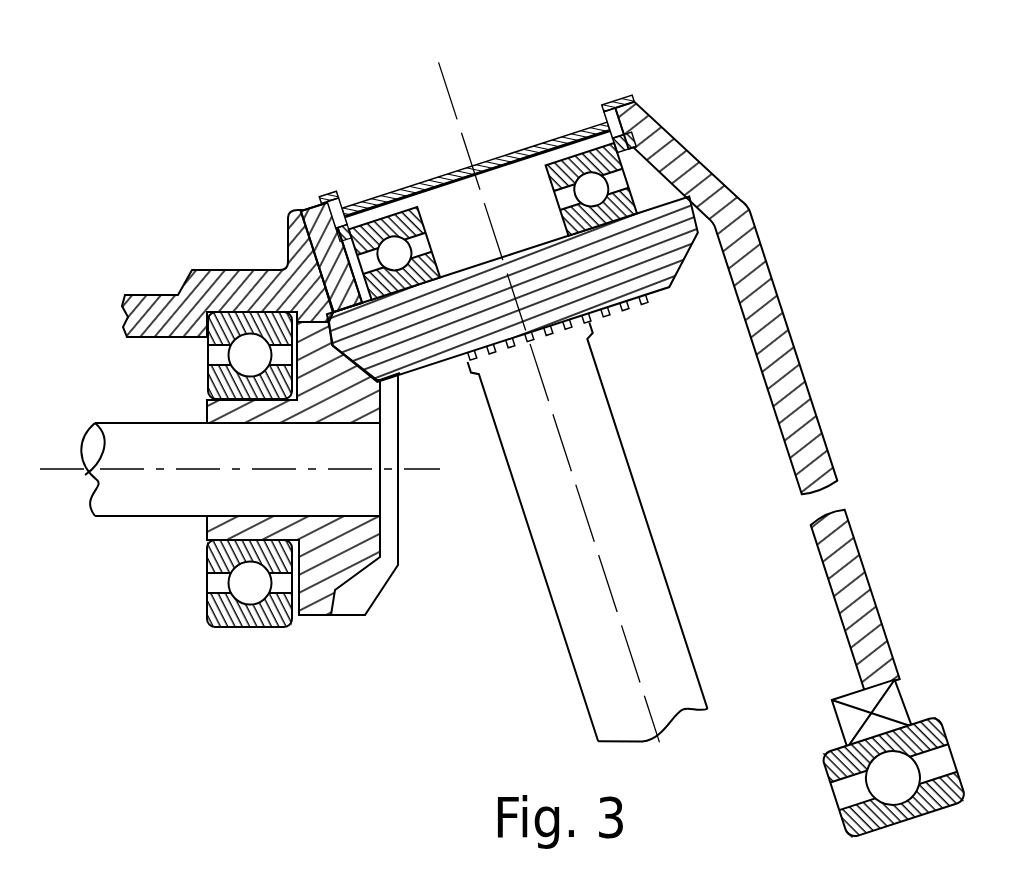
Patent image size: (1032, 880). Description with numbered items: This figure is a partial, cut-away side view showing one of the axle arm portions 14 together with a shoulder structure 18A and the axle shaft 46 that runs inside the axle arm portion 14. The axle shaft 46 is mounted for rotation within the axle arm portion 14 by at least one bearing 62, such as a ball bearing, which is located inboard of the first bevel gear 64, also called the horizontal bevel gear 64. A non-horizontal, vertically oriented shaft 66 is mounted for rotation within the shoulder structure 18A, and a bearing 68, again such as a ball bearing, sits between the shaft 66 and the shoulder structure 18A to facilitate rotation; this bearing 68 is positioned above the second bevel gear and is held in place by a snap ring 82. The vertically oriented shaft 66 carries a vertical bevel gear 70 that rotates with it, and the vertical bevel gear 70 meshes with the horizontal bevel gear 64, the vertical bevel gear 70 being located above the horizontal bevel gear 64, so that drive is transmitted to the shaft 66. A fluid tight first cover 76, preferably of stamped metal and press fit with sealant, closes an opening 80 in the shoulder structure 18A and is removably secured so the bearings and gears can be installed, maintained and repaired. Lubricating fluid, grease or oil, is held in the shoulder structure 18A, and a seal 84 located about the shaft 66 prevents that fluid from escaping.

The axle arm portion 14 is at (177, 296).
The shoulder structure 18A is at (647, 78).
The axle shaft 46 is at (200, 503).
The bearing 62 is at (247, 623).
The first bevel gear 64 is at (364, 587).
The vertically oriented shaft 66 is at (575, 636).
The bearing 68 is at (625, 185).
The vertical bevel gear 70 is at (617, 300).
The first cover 76 is at (555, 145).
The opening 80 is at (390, 210).
The snap ring 82 is at (630, 140).
The seal 84 is at (893, 707).